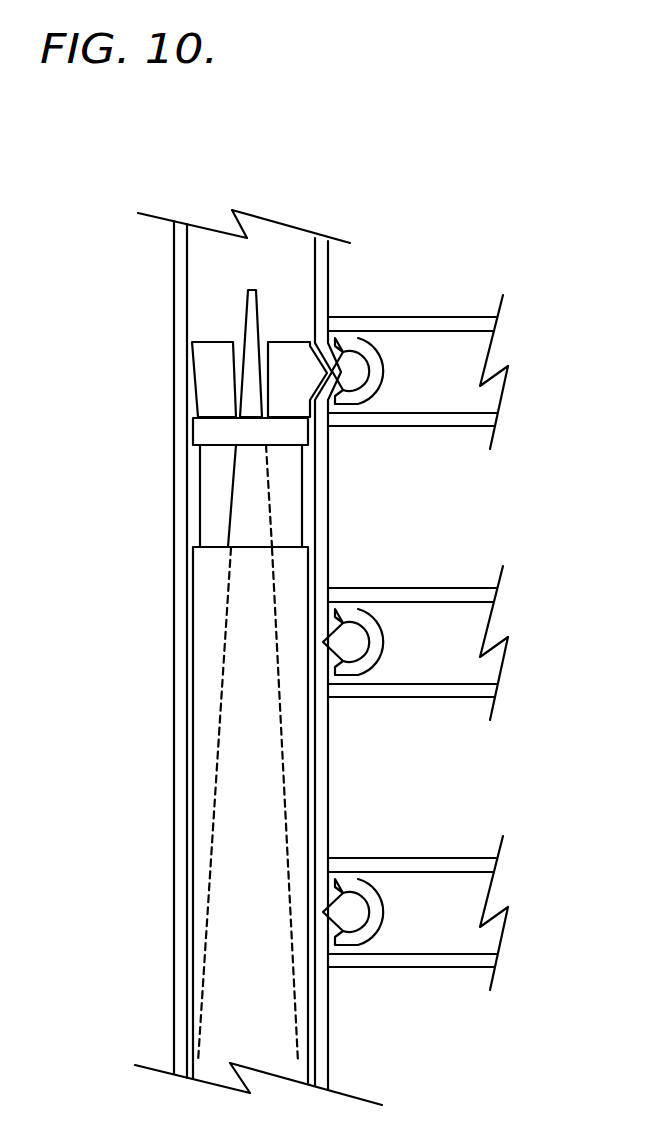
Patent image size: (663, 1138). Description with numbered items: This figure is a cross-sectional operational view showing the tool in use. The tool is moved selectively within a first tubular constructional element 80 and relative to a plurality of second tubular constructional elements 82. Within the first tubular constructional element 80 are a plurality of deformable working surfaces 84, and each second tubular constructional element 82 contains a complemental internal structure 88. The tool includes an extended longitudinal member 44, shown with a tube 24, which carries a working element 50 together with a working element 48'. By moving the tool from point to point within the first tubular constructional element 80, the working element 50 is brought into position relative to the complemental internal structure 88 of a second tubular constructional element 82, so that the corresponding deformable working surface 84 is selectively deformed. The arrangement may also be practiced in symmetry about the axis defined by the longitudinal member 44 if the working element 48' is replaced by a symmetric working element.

The tube 24 is at (205, 585).
The extended longitudinal member 44 is at (240, 700).
The working element 48' is at (202, 427).
The working element 50 is at (288, 362).
The first tubular constructional element 80 is at (333, 1052).
The second tubular constructional element 82 is at (388, 318).
The deformable working surface 84 is at (337, 372).
The complemental internal structure 88 is at (372, 362).